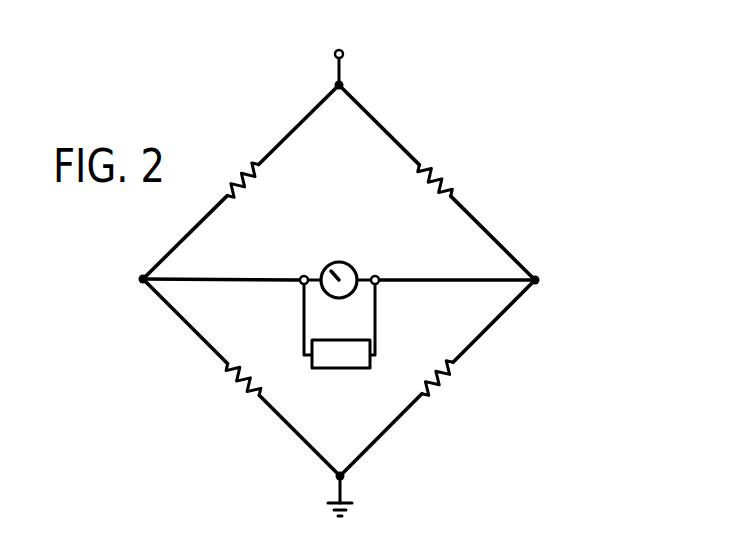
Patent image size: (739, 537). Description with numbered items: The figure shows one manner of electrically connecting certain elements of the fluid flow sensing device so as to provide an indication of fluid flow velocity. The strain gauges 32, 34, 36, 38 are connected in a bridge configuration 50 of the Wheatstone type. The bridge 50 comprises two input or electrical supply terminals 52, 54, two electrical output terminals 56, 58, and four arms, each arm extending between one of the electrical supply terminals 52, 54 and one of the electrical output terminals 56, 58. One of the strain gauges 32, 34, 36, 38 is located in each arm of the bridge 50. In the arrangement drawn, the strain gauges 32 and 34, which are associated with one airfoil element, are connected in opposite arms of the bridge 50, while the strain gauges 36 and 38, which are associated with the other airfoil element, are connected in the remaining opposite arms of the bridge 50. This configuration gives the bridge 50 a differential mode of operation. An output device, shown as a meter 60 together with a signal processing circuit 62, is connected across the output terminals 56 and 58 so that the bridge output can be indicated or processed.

The bridge configuration 50 is at (244, 124).
The strain gauge 32 is at (246, 375).
The strain gauge 34 is at (430, 183).
The strain gauge 36 is at (249, 178).
The strain gauge 38 is at (437, 373).
The electrical supply terminal 52 is at (344, 88).
The electrical supply terminal 54 is at (346, 478).
The electrical output terminal 56 is at (303, 276).
The electrical output terminal 58 is at (377, 276).
The meter 60 is at (340, 262).
The signal processing circuit 62 is at (338, 369).